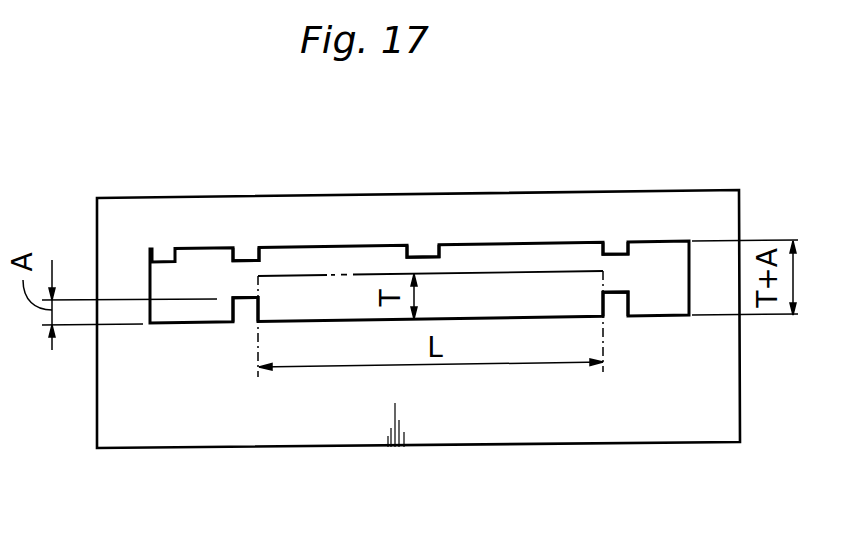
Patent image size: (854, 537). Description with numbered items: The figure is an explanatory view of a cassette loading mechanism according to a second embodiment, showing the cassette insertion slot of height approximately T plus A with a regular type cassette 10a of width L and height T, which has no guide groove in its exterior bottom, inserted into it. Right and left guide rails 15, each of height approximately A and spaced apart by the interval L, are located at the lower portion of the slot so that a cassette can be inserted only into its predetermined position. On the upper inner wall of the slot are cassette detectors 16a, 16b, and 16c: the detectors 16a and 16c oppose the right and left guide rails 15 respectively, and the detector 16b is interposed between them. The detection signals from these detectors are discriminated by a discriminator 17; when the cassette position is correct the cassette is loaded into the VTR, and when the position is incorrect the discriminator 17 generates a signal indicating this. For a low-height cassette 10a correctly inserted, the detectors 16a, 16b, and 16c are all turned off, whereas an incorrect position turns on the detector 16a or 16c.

The discriminator 17 is at (163, 257).
The cassette detector 16a is at (243, 258).
The cassette detector 16b is at (420, 255).
The cassette detector 16c is at (610, 248).
The regular type cassette 10a is at (573, 285).
The guide rails 15 is at (242, 305).